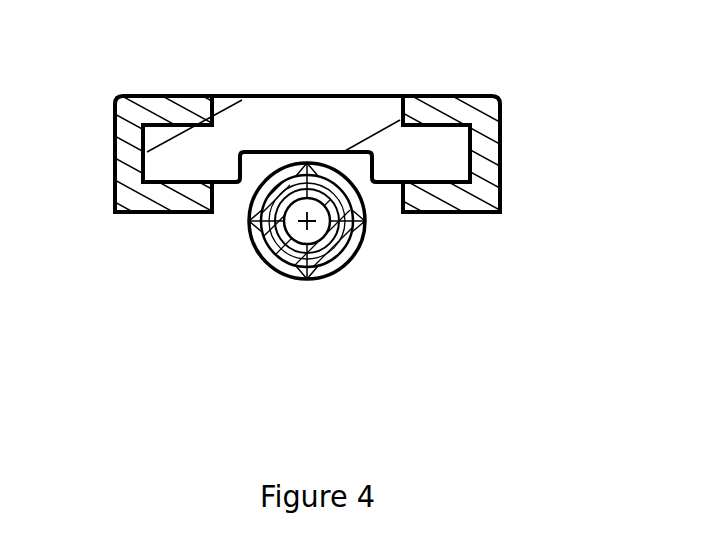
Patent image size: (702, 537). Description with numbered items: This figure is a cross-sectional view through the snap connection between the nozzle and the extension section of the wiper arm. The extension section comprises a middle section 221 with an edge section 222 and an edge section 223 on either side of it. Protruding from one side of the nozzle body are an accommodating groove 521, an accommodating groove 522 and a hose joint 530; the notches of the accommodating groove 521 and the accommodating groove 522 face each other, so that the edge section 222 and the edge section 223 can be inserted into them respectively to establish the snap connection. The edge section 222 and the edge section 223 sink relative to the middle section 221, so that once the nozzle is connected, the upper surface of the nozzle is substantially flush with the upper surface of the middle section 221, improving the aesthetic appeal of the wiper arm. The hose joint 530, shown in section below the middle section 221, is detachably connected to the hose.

The middle section 221 is at (332, 96).
The edge section 222 is at (180, 150).
The edge section 223 is at (440, 152).
The accommodating groove 521 is at (118, 208).
The accommodating groove 522 is at (500, 208).
The hose joint 530 is at (282, 268).